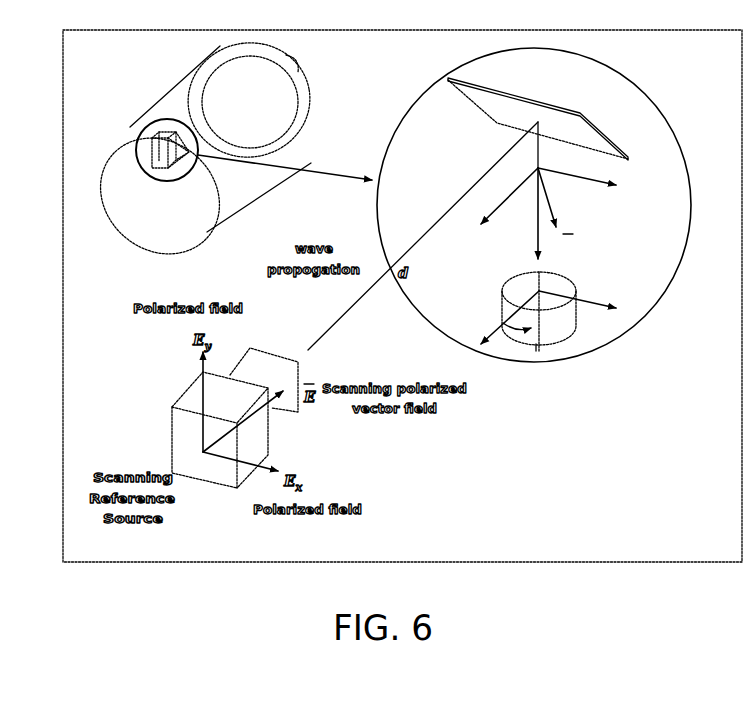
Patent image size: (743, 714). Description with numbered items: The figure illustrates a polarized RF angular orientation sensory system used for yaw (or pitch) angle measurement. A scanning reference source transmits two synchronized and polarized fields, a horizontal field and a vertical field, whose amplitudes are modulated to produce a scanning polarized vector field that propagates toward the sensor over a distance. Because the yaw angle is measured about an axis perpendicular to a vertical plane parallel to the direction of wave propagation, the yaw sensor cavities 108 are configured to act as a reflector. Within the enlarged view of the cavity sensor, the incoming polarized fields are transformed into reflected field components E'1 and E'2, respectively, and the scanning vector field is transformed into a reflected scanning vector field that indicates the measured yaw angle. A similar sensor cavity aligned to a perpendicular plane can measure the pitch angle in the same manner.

The yaw sensor cavity 108 is at (483, 52).
The first polarized field component E' 1 is at (592, 183).
The second polarized field component E' 2 is at (501, 211).